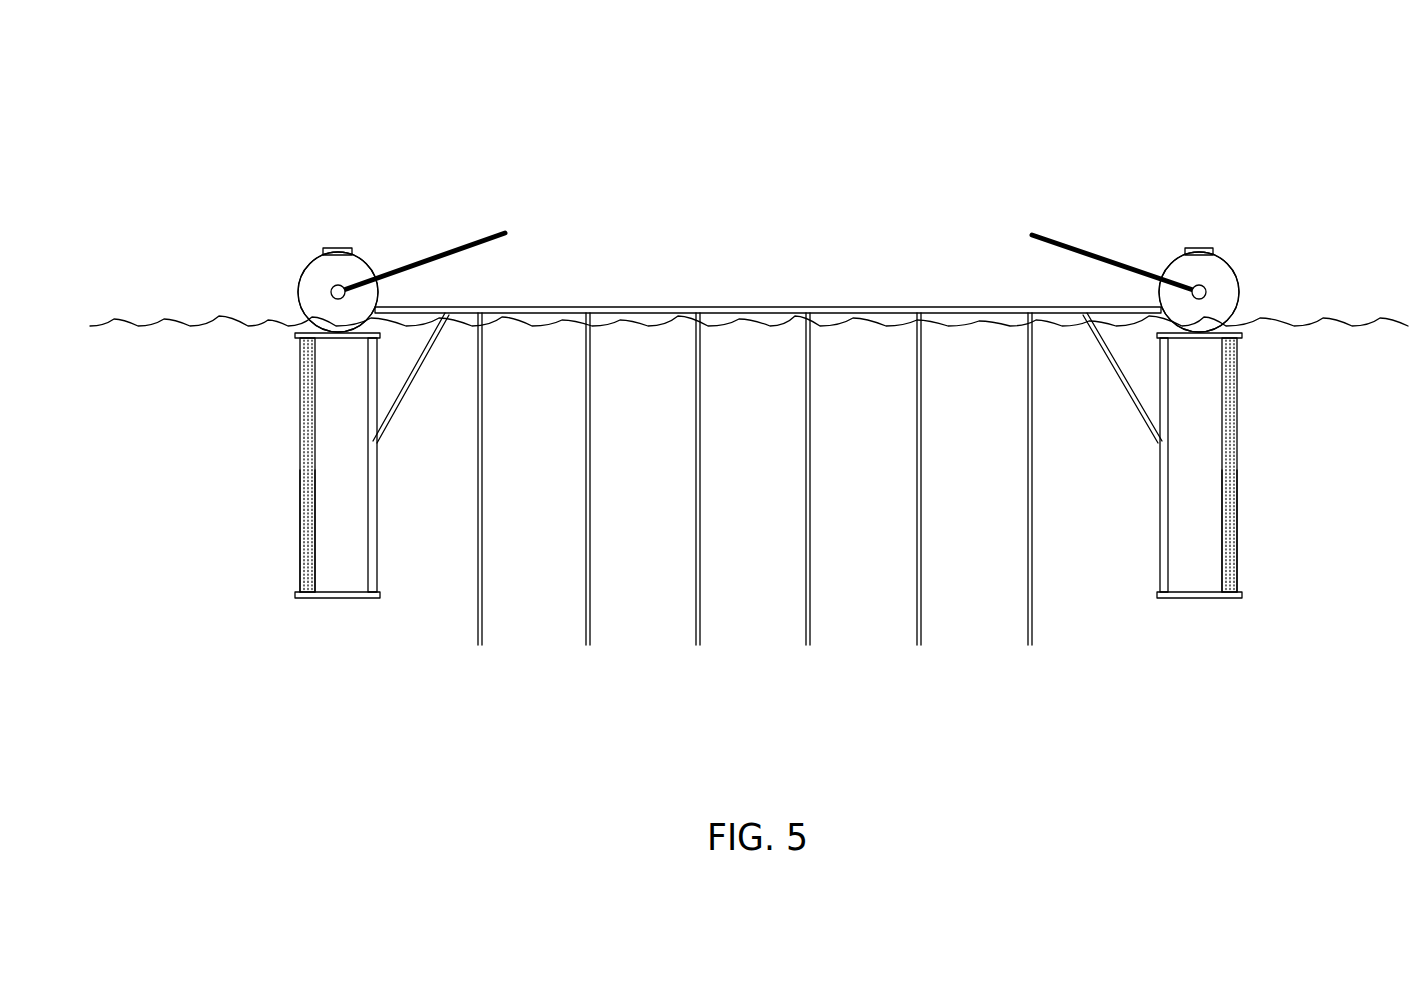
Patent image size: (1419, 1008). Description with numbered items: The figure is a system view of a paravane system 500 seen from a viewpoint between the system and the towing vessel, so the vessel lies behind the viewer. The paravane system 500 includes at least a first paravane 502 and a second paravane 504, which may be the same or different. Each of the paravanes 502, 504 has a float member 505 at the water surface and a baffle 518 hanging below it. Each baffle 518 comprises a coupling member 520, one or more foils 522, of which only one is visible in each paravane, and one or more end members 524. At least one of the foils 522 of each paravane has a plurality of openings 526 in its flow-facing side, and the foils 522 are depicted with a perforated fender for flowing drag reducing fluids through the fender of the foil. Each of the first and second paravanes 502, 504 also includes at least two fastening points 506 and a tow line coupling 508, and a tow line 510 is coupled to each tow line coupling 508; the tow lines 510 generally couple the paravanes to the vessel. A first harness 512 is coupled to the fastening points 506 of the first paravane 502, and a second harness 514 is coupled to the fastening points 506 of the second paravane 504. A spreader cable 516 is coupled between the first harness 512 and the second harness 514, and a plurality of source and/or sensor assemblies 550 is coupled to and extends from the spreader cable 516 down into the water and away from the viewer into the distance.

The paravane system 500 is at (1092, 143).
The first paravane 502 is at (1233, 258).
The second paravane 504 is at (305, 262).
The float member 505 is at (300, 290).
The fastening points 506 is at (380, 308).
The tow line coupling 508 is at (344, 290).
The tow line 510 is at (444, 253).
The first harness 512 is at (1111, 360).
The second harness 514 is at (424, 358).
The spreader cable 516 is at (938, 306).
The baffle 518 is at (332, 607).
The coupling member 520 is at (295, 335).
The foils 522 is at (300, 426).
The end members 524 is at (297, 593).
The openings 526 is at (300, 520).
The source and/or sensor assemblies 550 is at (1048, 640).